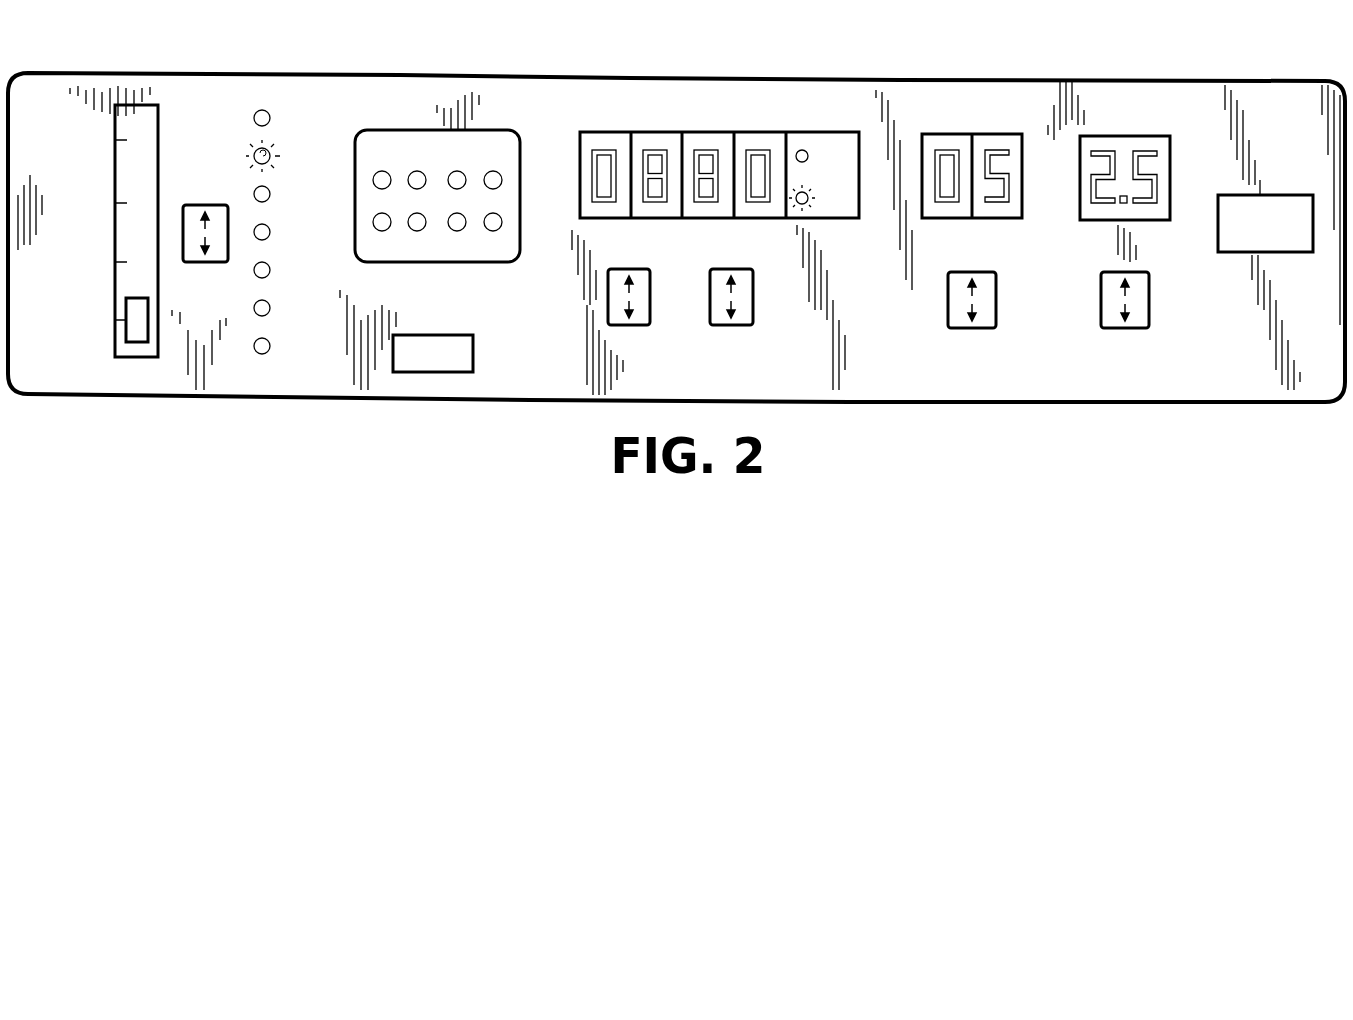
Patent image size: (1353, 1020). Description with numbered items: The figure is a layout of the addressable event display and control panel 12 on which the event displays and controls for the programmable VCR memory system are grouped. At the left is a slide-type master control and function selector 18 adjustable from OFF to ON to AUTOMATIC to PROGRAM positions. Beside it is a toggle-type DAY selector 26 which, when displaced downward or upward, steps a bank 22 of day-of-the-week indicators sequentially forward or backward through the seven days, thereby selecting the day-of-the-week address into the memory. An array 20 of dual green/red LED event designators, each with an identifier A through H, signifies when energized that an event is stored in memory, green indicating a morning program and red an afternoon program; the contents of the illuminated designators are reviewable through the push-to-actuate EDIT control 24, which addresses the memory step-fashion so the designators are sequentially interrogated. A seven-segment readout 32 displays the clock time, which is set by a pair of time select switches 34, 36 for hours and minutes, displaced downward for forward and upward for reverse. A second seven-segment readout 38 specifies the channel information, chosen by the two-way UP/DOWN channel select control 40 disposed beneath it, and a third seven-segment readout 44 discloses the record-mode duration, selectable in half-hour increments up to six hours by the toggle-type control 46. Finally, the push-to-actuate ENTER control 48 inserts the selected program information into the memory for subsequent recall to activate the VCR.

The panel 12 is at (600, 70).
The master control and function selector 18 is at (135, 357).
The array of event designators 20 is at (422, 130).
The bank of day-of-the-week indicators 22 is at (262, 110).
The EDIT control 24 is at (435, 363).
The DAY selector 26 is at (205, 205).
The seven-segment readout 32 is at (705, 132).
The hour time select switch 34 is at (608, 302).
The minute time select switch 36 is at (753, 302).
The channel seven-segment readout 38 is at (960, 134).
The channel select control 40 is at (948, 295).
The duration seven-segment readout 44 is at (1117, 136).
The duration control 46 is at (1101, 295).
The ENTER control 48 is at (1273, 195).